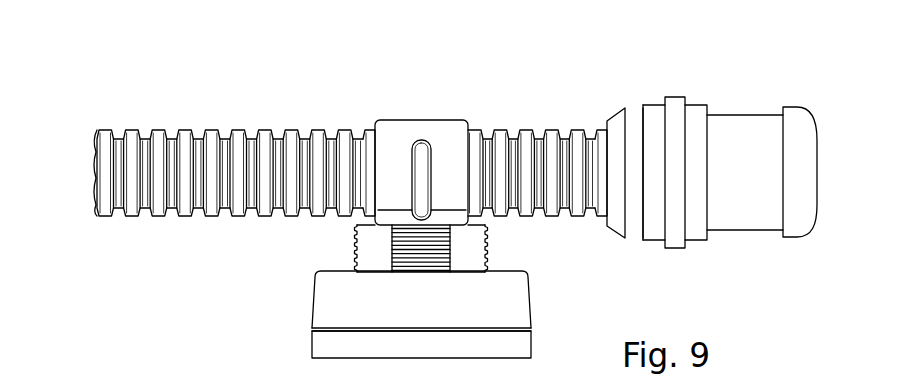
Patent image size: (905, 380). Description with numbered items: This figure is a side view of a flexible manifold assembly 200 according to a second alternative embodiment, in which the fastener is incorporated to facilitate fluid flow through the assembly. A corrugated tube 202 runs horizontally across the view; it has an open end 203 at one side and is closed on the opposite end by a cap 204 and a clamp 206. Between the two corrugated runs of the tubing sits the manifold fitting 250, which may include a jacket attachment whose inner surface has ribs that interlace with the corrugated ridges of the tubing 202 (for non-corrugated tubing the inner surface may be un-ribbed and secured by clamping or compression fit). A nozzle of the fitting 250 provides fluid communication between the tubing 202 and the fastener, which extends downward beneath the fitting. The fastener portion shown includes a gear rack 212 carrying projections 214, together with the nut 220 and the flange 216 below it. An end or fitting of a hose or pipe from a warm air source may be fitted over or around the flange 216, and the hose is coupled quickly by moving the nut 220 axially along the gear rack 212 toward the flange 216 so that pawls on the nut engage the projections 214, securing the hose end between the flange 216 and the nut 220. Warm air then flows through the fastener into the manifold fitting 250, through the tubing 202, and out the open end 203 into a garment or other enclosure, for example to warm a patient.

The flexible manifold assembly 200 is at (488, 63).
The corrugated tube 202 is at (237, 135).
The open end 203 is at (94, 176).
The cap 204 is at (797, 232).
The clamp 206 is at (677, 103).
The gear rack 212 is at (472, 250).
The projections 214 is at (420, 252).
The flange 216 is at (522, 350).
The nut 220 is at (520, 298).
The manifold fitting 250 is at (439, 128).